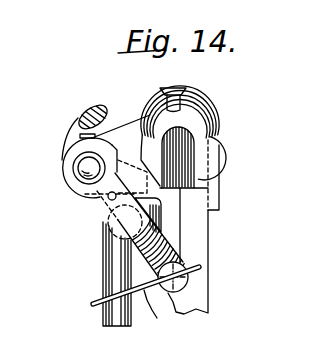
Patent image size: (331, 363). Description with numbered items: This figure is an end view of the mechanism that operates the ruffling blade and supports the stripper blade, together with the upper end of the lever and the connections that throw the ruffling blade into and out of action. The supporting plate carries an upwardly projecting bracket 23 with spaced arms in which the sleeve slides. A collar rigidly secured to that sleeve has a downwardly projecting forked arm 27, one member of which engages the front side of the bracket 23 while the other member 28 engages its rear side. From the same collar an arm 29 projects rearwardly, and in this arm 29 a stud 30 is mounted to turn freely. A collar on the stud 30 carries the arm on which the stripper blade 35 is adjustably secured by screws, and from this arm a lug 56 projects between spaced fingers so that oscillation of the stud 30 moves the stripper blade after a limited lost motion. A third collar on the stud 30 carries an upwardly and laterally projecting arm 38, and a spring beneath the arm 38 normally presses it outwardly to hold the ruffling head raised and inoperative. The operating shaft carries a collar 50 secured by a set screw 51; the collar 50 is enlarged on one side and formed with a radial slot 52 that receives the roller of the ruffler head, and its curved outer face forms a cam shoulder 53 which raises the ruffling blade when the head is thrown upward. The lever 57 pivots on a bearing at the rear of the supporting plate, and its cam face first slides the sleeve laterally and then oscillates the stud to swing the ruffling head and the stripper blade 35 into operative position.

The bracket 23 is at (200, 272).
The forked arm 27 is at (218, 189).
The member of forked arm 28 is at (145, 222).
The arm 29 is at (133, 126).
The stud 30 is at (88, 170).
The stripper blade 35 is at (142, 296).
The arm 38 is at (80, 118).
The collar 50 is at (180, 123).
The set screw 51 is at (170, 90).
The radial slot 52 is at (176, 152).
The cam shoulder 53 is at (214, 142).
The lug 56 is at (107, 199).
The lever 57 is at (116, 270).